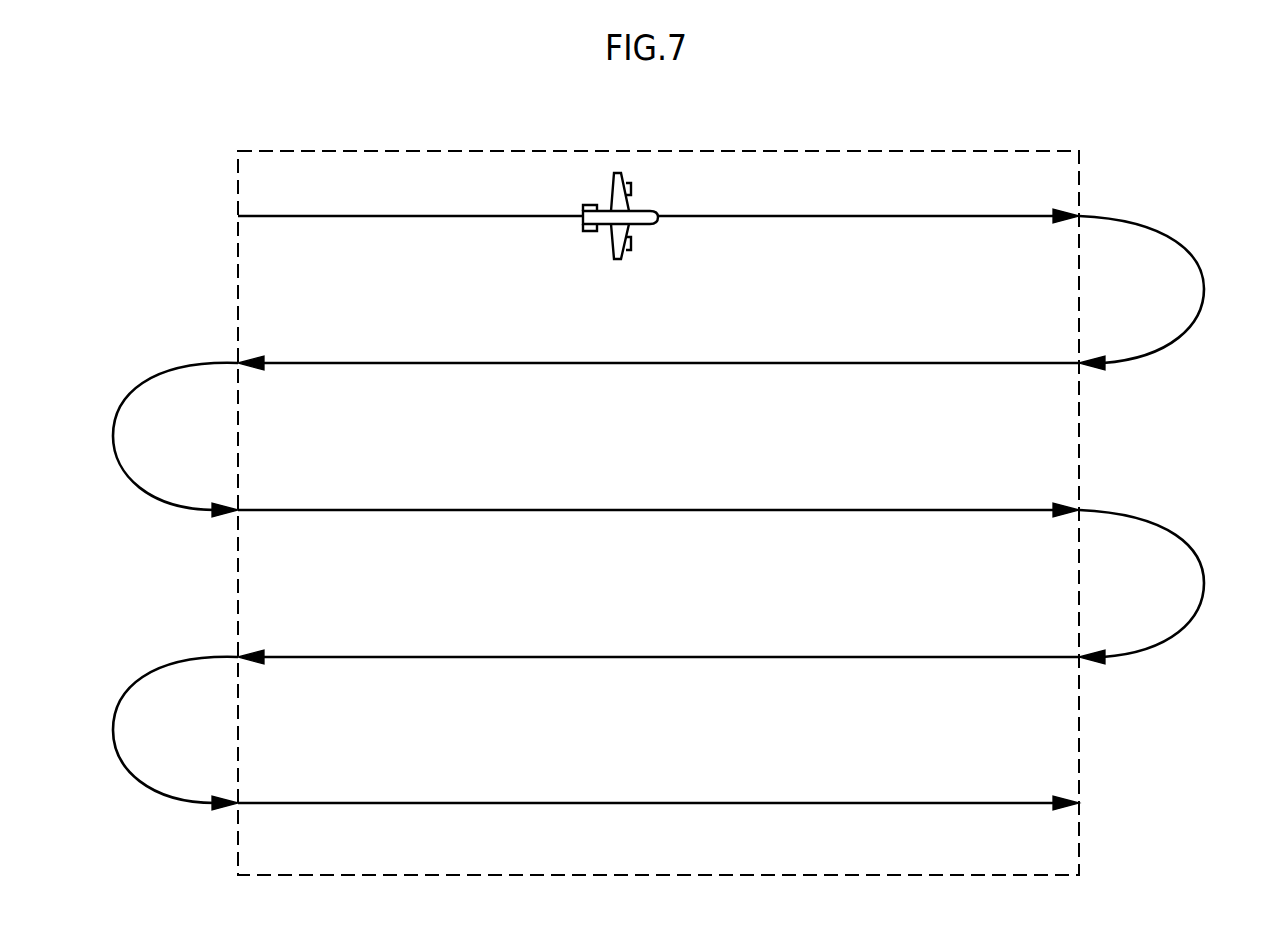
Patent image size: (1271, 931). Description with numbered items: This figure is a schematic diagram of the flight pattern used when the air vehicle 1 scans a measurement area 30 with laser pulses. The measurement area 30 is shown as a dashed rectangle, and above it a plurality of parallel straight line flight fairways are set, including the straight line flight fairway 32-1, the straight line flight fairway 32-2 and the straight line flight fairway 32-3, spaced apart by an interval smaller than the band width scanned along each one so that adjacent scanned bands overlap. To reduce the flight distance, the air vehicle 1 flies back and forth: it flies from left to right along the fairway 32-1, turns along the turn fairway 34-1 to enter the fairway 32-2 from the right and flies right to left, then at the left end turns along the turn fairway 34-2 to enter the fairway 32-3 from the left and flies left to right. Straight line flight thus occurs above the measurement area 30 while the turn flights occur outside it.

The air vehicle 1 is at (662, 210).
The measurement area 30 is at (842, 151).
The straight line flight fairway 32-1 is at (835, 216).
The straight line flight fairway 32-2 is at (828, 363).
The straight line flight fairway 32-3 is at (828, 510).
The turn fairway 34-1 is at (1160, 235).
The turn fairway 34-2 is at (157, 382).